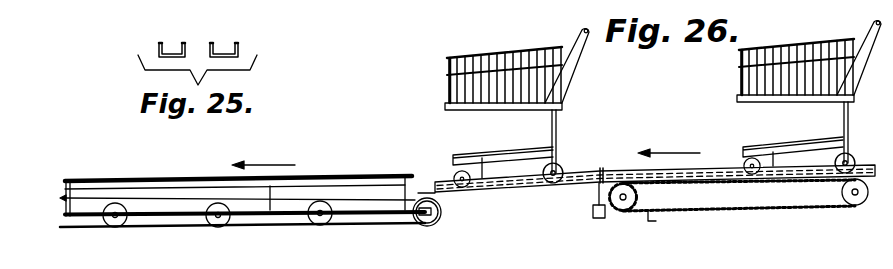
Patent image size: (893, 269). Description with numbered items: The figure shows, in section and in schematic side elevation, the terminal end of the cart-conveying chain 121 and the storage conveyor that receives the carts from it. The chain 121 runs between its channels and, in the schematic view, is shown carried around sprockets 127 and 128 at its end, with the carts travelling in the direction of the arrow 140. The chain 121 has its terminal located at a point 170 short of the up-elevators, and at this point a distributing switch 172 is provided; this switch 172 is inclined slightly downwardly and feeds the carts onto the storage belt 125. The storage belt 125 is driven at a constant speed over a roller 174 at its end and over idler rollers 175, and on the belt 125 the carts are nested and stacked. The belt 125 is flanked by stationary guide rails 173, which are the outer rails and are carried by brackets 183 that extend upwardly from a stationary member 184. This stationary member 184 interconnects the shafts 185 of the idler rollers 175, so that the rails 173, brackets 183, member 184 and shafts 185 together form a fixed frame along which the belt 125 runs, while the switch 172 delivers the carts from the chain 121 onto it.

In FIG. 25, the direction of cart travel arrow 140 is at (278, 166).
In FIG. 26, the direction of cart travel arrow 140 is at (675, 147).
In FIG. 25, the storage belt 125 is at (370, 227).
In FIG. 25, the stationary guide rail 173 is at (160, 183).
In FIG. 25, the roller 174 is at (427, 214).
In FIG. 25, the idler roller 175 is at (218, 217).
In FIG. 25, the bracket 183 is at (277, 190).
In FIG. 25, the stationary member 184 is at (292, 218).
In FIG. 25, the shaft 185 is at (115, 216).
In FIG. 26, the point 170 is at (607, 168).
In FIG. 26, the distributing switch 172 is at (487, 192).
In FIG. 26, the drive sprocket 127 is at (627, 197).
In FIG. 26, the idler sprocket 128 is at (855, 192).
In FIG. 26, the chain 121 is at (718, 210).